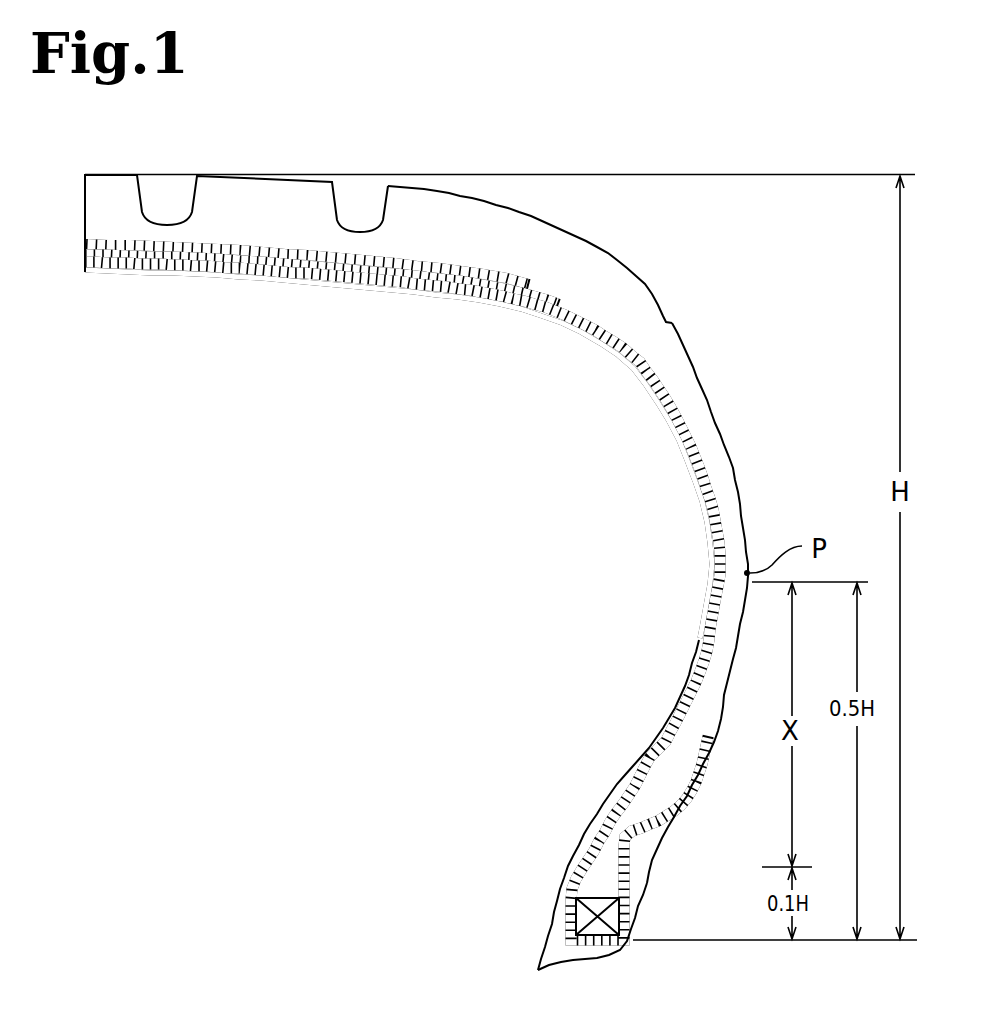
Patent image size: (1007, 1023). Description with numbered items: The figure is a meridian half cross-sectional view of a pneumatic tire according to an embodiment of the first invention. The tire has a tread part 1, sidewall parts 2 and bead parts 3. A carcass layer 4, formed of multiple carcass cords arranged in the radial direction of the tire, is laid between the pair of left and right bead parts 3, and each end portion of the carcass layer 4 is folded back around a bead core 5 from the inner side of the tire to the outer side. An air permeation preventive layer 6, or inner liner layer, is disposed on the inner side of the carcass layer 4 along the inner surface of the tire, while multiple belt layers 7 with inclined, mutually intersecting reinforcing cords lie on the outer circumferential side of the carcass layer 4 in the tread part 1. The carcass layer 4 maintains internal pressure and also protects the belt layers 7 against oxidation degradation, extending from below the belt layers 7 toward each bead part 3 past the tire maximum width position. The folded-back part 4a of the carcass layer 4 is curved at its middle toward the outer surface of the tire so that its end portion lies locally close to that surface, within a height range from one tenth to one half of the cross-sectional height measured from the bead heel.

The tread part 1 is at (244, 167).
The sidewall parts 2 is at (754, 507).
The bead parts 3 is at (658, 905).
The carcass layer 4 is at (705, 460).
The folded-back part 4a is at (697, 781).
The bead core 5 is at (580, 918).
The air permeation preventive layer 6 is at (567, 328).
The belt layers 7 is at (230, 268).